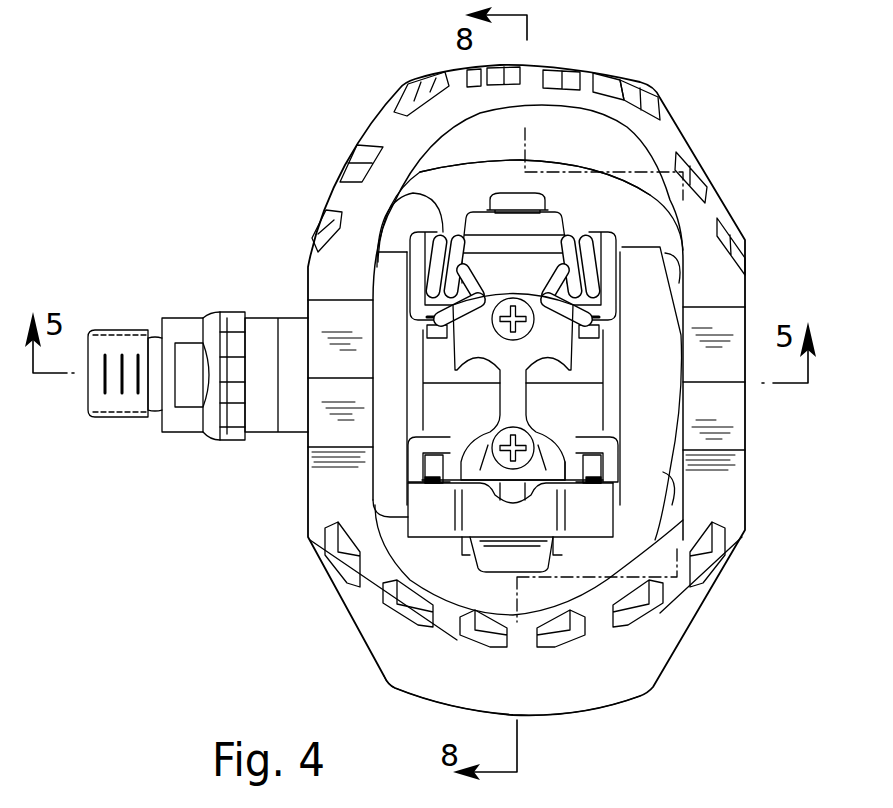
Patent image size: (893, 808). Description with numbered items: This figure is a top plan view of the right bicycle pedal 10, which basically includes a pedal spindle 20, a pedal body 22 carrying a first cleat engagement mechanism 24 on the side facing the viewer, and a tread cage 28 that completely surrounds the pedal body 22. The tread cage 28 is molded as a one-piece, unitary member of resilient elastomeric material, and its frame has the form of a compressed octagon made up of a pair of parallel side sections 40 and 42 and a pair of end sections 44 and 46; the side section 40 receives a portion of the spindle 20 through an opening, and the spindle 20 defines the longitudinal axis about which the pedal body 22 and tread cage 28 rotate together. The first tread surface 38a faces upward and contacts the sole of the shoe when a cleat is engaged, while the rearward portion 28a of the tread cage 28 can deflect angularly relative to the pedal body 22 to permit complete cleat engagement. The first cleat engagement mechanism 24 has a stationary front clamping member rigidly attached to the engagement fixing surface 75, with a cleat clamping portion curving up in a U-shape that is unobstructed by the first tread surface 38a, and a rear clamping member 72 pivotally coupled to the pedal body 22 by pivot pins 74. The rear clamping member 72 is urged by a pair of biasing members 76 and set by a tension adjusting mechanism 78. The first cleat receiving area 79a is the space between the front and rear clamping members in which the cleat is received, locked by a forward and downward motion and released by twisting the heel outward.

The bicycle pedal 10 is at (237, 128).
The pedal shaft or spindle 20 is at (183, 312).
The pedal body 22 is at (638, 245).
The first cleat engagement mechanism 24 is at (437, 397).
The tread cage 28 is at (703, 615).
The rearward portion of the tread cage 28a is at (372, 600).
The first tread surface 38a is at (667, 137).
The side section 40 is at (340, 323).
The side section 42 is at (727, 322).
The end section 44 is at (530, 80).
The end section 46 is at (562, 690).
The rear clamping member 72 is at (578, 537).
The pivot pin 74 is at (680, 267).
The engagement fixing surface 75 is at (573, 382).
The biasing member 76 is at (440, 237).
The tension adjusting mechanism 78 is at (503, 192).
The first cleat receiving area 79a is at (570, 401).